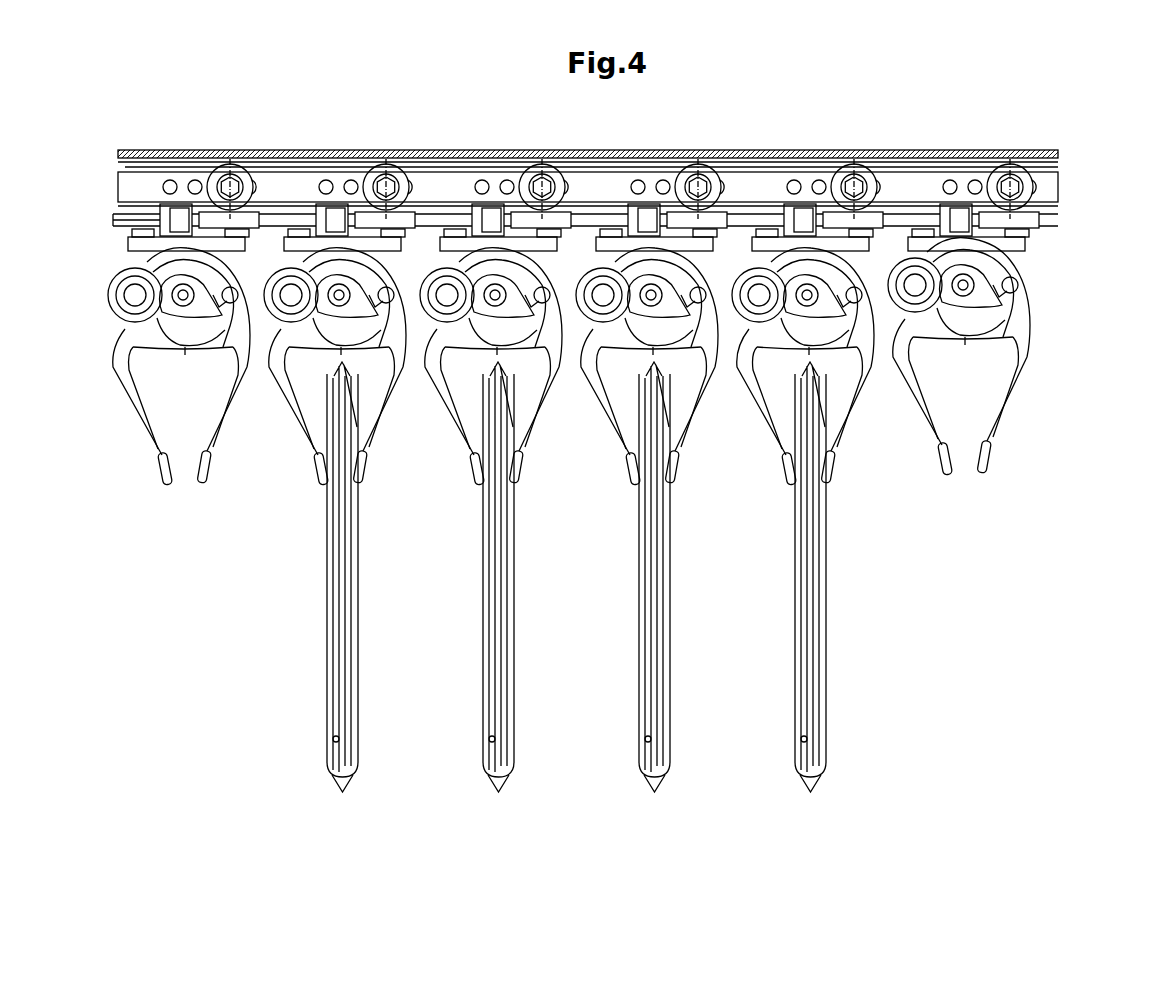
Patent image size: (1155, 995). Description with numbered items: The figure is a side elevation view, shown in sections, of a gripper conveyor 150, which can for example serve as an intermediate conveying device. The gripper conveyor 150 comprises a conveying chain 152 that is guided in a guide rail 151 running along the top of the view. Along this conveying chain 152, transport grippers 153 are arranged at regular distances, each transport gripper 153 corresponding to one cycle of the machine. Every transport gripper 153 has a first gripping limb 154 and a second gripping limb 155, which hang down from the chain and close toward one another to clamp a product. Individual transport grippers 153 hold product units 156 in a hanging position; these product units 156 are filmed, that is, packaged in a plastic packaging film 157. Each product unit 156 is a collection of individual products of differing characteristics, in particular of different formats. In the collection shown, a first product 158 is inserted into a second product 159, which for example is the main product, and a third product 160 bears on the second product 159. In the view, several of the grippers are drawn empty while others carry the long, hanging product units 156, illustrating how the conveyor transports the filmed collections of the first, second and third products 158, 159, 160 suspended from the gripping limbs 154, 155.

The gripper conveyor 150 is at (960, 127).
The guide rail 151 is at (810, 150).
The conveying chain 152 is at (462, 188).
The transport gripper 153 is at (1047, 315).
The first gripping limb 154 is at (909, 404).
The second gripping limb 155 is at (1041, 405).
The product unit 156 is at (838, 637).
The plastic packaging film 157 is at (848, 575).
The first product 158 is at (775, 567).
The second product 159 is at (767, 788).
The third product 160 is at (846, 573).